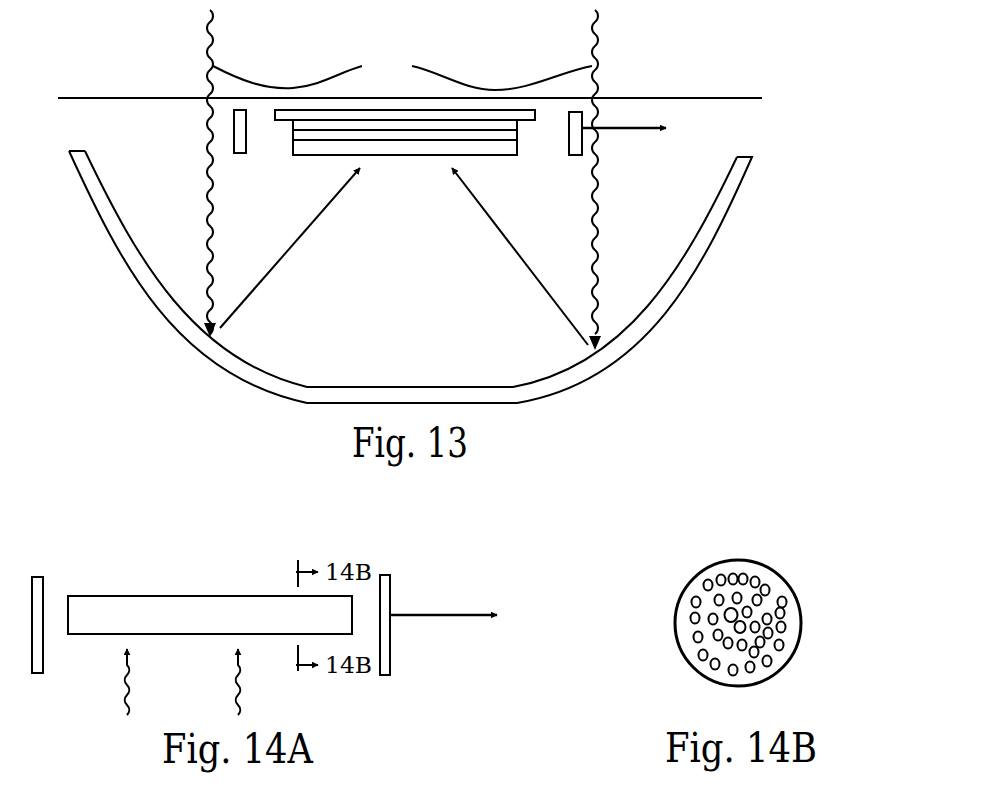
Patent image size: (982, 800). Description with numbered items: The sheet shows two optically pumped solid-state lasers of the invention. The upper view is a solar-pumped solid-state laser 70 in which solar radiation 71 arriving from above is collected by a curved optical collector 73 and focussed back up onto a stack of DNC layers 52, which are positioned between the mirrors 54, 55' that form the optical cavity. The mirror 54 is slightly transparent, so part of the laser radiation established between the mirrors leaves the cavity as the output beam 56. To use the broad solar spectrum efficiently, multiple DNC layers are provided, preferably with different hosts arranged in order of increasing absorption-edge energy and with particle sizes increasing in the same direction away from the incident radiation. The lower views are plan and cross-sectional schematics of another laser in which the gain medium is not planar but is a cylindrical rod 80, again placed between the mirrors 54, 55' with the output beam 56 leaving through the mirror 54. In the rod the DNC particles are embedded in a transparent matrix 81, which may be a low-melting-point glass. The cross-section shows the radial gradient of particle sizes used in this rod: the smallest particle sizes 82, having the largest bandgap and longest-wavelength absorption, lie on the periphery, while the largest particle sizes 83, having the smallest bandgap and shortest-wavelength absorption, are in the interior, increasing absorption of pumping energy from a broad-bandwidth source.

In FIG. 13, the solar radiation 71 is at (402, 72).
In FIG. 13, the DNC layers 52 is at (284, 146).
In FIG. 13, the mirror 55' is at (251, 168).
In FIG. 14A, the mirror 55' is at (67, 603).
In FIG. 13, the mirror 54 is at (575, 157).
In FIG. 14A, the mirror 54 is at (387, 578).
In FIG. 13, the output beam 56 is at (622, 130).
In FIG. 14A, the output beam 56 is at (428, 615).
In FIG. 13, the solar-pumped solid-state laser 70 is at (410, 278).
In FIG. 13, the optical collector 73 is at (630, 332).
In FIG. 14A, the cylindrical rod 80 is at (180, 608).
In FIG. 14B, the transparent matrix 81 is at (758, 576).
In FIG. 14B, the smallest particle sizes 82 is at (784, 644).
In FIG. 14B, the largest particle sizes 83 is at (753, 611).